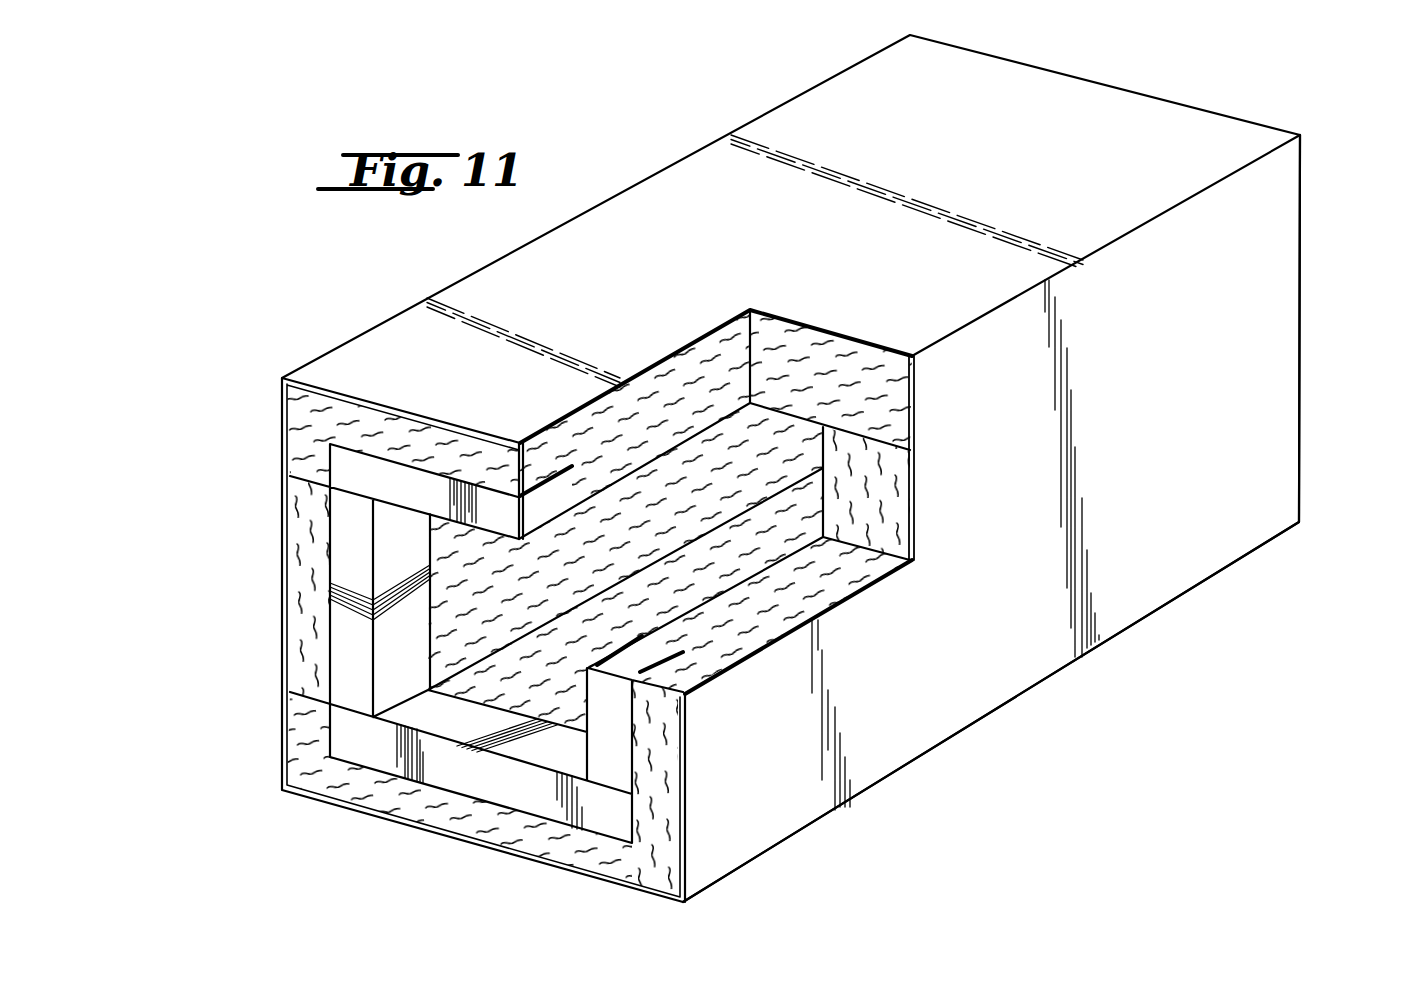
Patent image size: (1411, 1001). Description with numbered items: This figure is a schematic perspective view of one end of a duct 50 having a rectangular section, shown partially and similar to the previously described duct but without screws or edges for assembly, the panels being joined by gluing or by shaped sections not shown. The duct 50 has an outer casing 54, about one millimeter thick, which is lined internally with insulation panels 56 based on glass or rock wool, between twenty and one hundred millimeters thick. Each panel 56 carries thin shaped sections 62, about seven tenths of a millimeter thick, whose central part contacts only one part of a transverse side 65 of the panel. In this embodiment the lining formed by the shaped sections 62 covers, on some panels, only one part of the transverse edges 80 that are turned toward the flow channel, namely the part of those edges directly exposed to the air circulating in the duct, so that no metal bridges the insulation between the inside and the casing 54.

The duct with rectangular section 50 is at (1316, 252).
The casing 54 is at (1183, 567).
The insulation panels 56 is at (683, 373).
The shaped sections 62 is at (343, 738).
The transverse side of the panel 65 is at (340, 428).
The transverse edges 80 is at (370, 540).